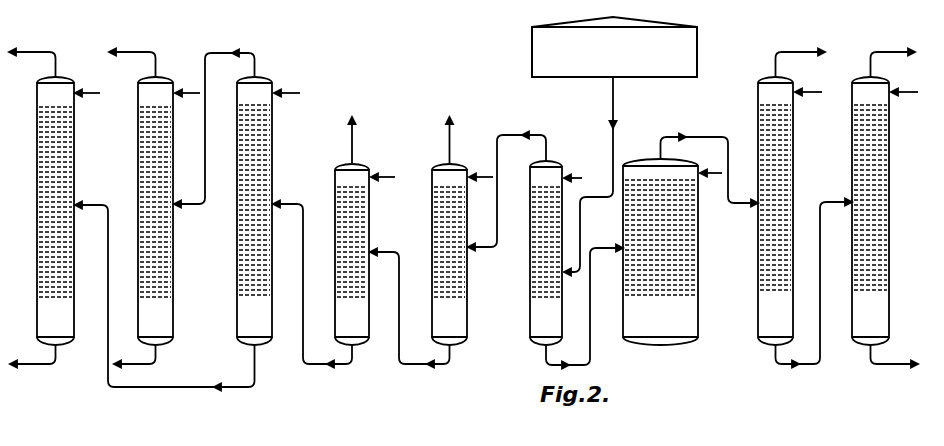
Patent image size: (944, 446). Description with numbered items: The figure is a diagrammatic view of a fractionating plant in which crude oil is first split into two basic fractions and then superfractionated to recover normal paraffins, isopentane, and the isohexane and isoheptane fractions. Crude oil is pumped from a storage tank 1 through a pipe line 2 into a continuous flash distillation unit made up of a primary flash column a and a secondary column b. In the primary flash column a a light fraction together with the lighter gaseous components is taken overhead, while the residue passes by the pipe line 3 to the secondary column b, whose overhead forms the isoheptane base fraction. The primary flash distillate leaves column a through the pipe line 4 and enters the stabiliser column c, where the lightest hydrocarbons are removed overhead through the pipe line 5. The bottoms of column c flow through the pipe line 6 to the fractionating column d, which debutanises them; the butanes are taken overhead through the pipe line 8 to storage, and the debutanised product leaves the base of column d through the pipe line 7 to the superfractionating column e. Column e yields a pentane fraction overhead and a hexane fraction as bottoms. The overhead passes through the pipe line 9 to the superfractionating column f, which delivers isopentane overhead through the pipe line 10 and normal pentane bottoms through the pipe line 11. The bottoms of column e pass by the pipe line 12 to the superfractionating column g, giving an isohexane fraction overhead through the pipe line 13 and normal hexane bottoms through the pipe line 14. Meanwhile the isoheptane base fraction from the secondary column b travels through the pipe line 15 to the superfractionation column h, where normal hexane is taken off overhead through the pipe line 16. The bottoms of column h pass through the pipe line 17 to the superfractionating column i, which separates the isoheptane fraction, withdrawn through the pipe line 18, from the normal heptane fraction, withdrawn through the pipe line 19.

The storage tank 1 is at (614, 47).
The pipe line 2 is at (599, 176).
The pipe line 3 is at (584, 307).
The pipe line 4 is at (507, 183).
The pipe line 5 is at (457, 140).
The pipe line 6 is at (410, 321).
The pipe line 7 is at (312, 297).
The pipe line 8 is at (359, 140).
The pipe line 9 is at (214, 129).
The pipe line 10 is at (132, 52).
The pipe line 11 is at (135, 354).
The pipe line 12 is at (165, 307).
The pipe line 13 is at (32, 52).
The pipe line 14 is at (33, 368).
The pipe line 15 is at (710, 162).
The pipe line 16 is at (801, 52).
The pipe line 17 is at (814, 296).
The pipe line 18 is at (893, 52).
The pipe line 19 is at (895, 368).
The primary flash column a is at (556, 253).
The secondary column b is at (672, 252).
The stabiliser column c is at (462, 254).
The fractionating column d is at (365, 254).
The superfractionating column e is at (268, 211).
The superfractionating column f is at (169, 211).
The superfractionating column g is at (68, 211).
The superfractionation column h is at (790, 211).
The superfractionating column i is at (885, 211).